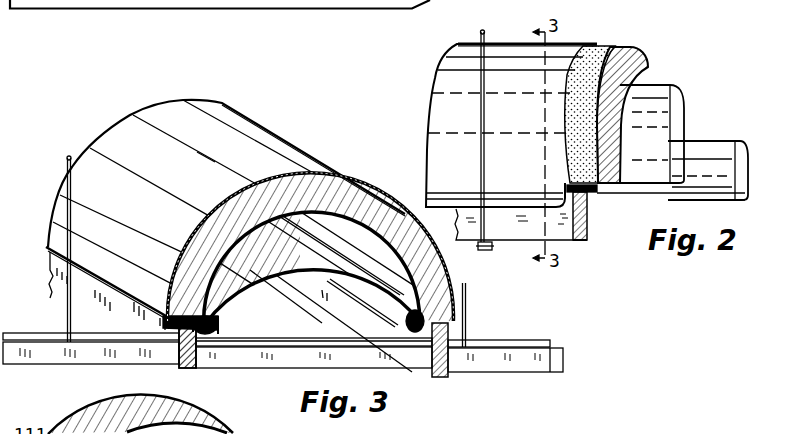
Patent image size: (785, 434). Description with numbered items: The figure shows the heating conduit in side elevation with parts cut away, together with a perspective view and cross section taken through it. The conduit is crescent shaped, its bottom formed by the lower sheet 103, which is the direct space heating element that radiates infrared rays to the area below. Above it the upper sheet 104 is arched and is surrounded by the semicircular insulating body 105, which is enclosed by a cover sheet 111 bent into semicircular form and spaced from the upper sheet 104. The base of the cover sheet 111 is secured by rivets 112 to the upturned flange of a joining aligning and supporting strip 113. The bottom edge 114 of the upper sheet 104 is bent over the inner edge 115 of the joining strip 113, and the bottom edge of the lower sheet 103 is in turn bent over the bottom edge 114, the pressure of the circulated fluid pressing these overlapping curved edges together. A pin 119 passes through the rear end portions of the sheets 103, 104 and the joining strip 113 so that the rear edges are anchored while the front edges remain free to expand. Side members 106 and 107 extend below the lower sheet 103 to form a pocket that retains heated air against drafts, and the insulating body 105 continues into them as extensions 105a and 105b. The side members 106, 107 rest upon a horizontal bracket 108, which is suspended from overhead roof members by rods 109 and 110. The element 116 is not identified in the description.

In FIG. 3, the lower sheet 103 is at (301, 274).
In FIG. 2, the lower sheet 103 is at (723, 141).
In FIG. 3, the upper sheet 104 is at (333, 220).
In FIG. 2, the upper sheet 104 is at (678, 95).
In FIG. 3, the insulating body 105 is at (346, 176).
In FIG. 2, the insulating body 105 is at (643, 60).
In FIG. 3, the extension of insulating body 105a is at (180, 355).
In FIG. 3, the extension of insulating body 105b is at (453, 362).
In FIG. 3, the side member 106 is at (188, 366).
In FIG. 2, the side member 106 is at (585, 253).
In FIG. 3, the side member 107 is at (448, 372).
In FIG. 3, the horizontal bracket 108 is at (43, 356).
In FIG. 2, the horizontal bracket 108 is at (494, 247).
In FIG. 3, the rod 109 is at (67, 159).
In FIG. 2, the rod 109 is at (485, 117).
In FIG. 3, the rod 110 is at (466, 301).
In FIG. 3, the cover sheet 111 is at (240, 190).
In FIG. 2, the cover sheet 111 is at (573, 55).
In FIG. 3, the rivets 112 is at (142, 290).
In FIG. 2, the rivets 112 is at (537, 181).
In FIG. 3, the joining aligning and supporting strip 113 is at (187, 292).
In FIG. 2, the joining aligning and supporting strip 113 is at (587, 200).
In FIG. 3, the bottom edge of sheet 104 114 is at (218, 318).
In FIG. 2, the bottom edge of sheet 104 114 is at (634, 195).
In FIG. 3, the inner edge of joining strip 115 is at (378, 312).
In FIG. 2, the inner edge of joining strip 115 is at (577, 177).
In FIG. 3, the lip 116 is at (222, 328).
In FIG. 2, the lip 116 is at (696, 196).
In FIG. 3, the pin 119 is at (211, 351).